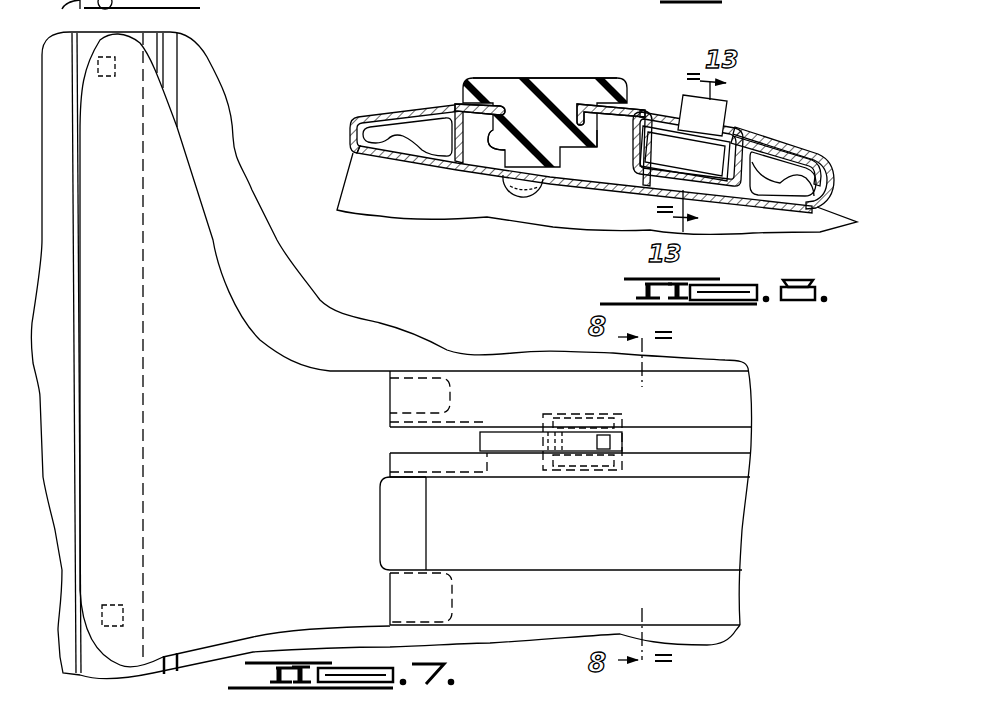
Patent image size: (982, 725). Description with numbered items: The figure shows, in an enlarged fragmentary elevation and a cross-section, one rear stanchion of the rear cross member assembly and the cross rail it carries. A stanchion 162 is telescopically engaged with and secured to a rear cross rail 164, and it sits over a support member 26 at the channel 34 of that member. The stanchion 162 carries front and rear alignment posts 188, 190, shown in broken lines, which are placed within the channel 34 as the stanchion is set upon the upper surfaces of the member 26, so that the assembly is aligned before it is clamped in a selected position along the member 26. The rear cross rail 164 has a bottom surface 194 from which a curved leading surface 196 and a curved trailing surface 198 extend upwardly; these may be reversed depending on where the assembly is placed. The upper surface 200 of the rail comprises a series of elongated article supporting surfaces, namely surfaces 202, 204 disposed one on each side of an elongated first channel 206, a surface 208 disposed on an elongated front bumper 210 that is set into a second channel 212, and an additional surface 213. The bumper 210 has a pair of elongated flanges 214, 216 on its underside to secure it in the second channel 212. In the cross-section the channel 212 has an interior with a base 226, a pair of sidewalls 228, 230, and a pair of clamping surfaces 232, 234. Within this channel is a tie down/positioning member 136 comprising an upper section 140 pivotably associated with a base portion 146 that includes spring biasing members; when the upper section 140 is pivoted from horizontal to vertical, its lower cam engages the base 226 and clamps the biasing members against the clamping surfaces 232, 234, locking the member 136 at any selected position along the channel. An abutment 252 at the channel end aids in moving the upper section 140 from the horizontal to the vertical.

In FIG. 7, the support member 26 is at (180, 59).
In FIG. 7, the channel 34 is at (88, 44).
In FIG. 7, the stanchion 162 is at (307, 383).
In FIG. 7, the front alignment post 188 is at (105, 78).
In FIG. 7, the rear alignment post 190 is at (124, 612).
In FIG. 7, the rear cross rail 164 is at (723, 366).
In FIG. 7, the article supporting surface 202 is at (737, 399).
In FIG. 8, the article supporting surface 202 is at (772, 148).
In FIG. 7, the abutment 252 is at (418, 440).
In FIG. 7, the first channel 206 is at (740, 442).
In FIG. 8, the first channel 206 is at (765, 127).
In FIG. 7, the article supporting surface 204 is at (735, 467).
In FIG. 8, the article supporting surface 204 is at (655, 113).
In FIG. 7, the upper section 140 is at (513, 452).
In FIG. 8, the upper section 140 is at (748, 101).
In FIG. 7, the tie down/positioning member 136 is at (525, 430).
In FIG. 8, the tie down/positioning member 136 is at (738, 116).
In FIG. 7, the base portion 146 is at (572, 416).
In FIG. 8, the base portion 146 is at (731, 174).
In FIG. 7, the front bumper 210 is at (722, 525).
In FIG. 8, the front bumper 210 is at (497, 95).
In FIG. 7, the additional surface 213 is at (733, 602).
In FIG. 8, the additional surface 213 is at (396, 112).
In FIG. 8, the bottom surface 194 is at (603, 193).
In FIG. 8, the curved trailing surface 198 is at (354, 128).
In FIG. 8, the second channel 212 is at (478, 128).
In FIG. 8, the base 226 is at (640, 172).
In FIG. 8, the sidewall 228 is at (637, 150).
In FIG. 8, the article supporting surface 208 is at (523, 76).
In FIG. 8, the flange 214 is at (497, 153).
In FIG. 8, the flange 216 is at (582, 150).
In FIG. 8, the upper surface 200 is at (646, 96).
In FIG. 8, the clamping surface 232 is at (685, 153).
In FIG. 8, the clamping surface 234 is at (776, 158).
In FIG. 8, the curved leading surface 196 is at (834, 182).
In FIG. 8, the sidewall 230 is at (760, 178).